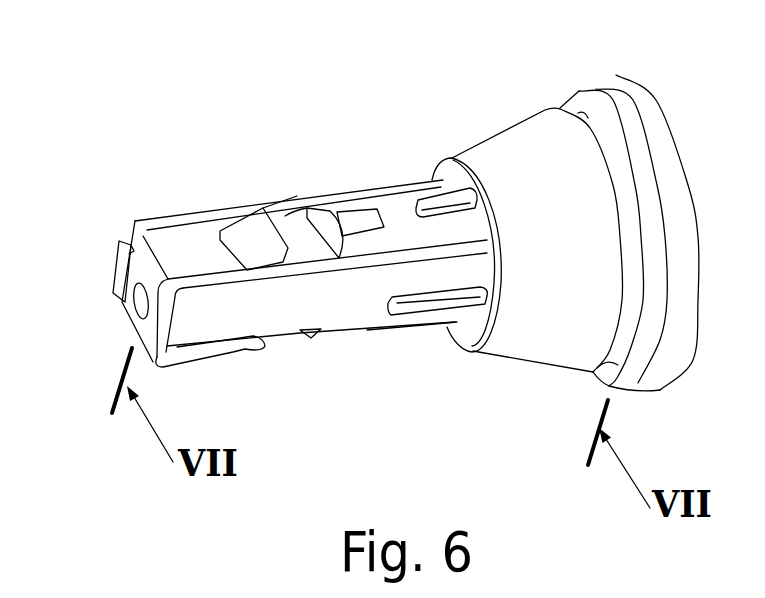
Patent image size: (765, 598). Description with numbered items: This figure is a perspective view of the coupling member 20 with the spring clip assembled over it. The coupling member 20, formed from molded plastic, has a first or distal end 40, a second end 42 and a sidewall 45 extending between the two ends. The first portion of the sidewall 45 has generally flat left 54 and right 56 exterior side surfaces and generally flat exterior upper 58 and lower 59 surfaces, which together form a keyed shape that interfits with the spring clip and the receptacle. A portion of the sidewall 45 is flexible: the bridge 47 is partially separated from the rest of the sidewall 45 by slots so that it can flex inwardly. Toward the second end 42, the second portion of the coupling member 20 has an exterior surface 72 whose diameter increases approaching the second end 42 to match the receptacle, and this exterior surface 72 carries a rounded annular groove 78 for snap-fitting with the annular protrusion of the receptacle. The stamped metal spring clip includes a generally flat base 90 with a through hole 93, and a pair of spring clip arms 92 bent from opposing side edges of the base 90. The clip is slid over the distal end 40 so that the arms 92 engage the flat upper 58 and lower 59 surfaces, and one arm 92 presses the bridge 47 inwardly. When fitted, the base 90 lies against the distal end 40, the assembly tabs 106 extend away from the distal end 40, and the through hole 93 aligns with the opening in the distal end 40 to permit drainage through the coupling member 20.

The coupling member 20 is at (328, 92).
The distal end 40 is at (135, 219).
The second end 42 is at (657, 102).
The sidewall 45 is at (387, 208).
The bridge 47 is at (295, 238).
The left exterior side surface 54 is at (228, 313).
The right exterior side surface 56 is at (132, 237).
The exterior upper surface 58 is at (297, 196).
The exterior lower surface 59 is at (287, 333).
The exterior surface 72 is at (545, 365).
The annular groove 78 is at (613, 152).
The base 90 is at (147, 333).
The spring clip arms 92 is at (223, 245).
The through hole 93 is at (133, 303).
The assembly tabs 106 is at (117, 268).